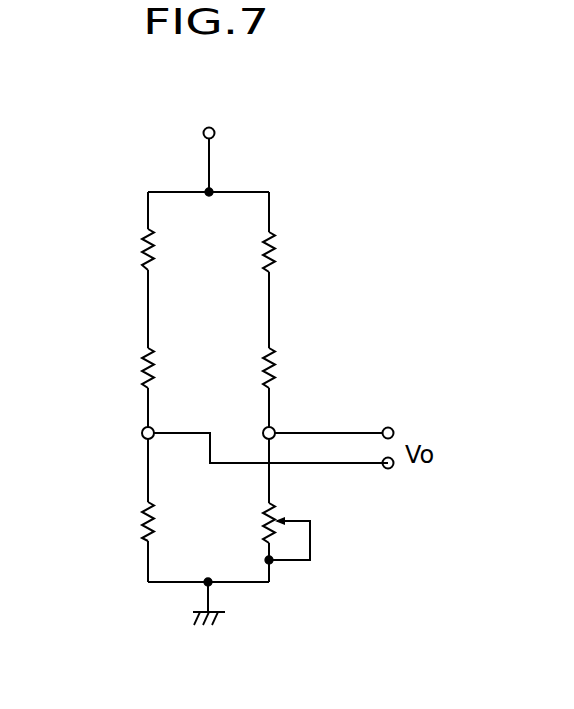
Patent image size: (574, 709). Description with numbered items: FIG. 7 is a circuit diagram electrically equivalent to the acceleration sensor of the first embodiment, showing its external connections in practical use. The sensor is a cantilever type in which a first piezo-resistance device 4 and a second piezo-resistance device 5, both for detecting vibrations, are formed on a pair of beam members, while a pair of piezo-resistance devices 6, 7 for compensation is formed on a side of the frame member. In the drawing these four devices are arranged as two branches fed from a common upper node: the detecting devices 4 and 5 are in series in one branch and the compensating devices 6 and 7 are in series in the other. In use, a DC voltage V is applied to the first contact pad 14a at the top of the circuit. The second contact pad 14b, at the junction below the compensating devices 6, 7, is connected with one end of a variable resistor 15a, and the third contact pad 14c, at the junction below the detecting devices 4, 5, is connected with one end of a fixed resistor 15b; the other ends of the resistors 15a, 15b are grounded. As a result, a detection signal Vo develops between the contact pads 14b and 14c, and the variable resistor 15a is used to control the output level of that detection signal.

The first piezo-resistance device 4 is at (140, 245).
The second piezo-resistance device 5 is at (140, 365).
The piezo-resistance device for compensation 6 is at (276, 250).
The piezo-resistance device for compensation 7 is at (276, 368).
The first contact pad 14a is at (215, 133).
The second contact pad 14b is at (277, 428).
The third contact pad 14c is at (141, 430).
The variable resistor 15a is at (279, 507).
The fixed resistor 15b is at (140, 512).